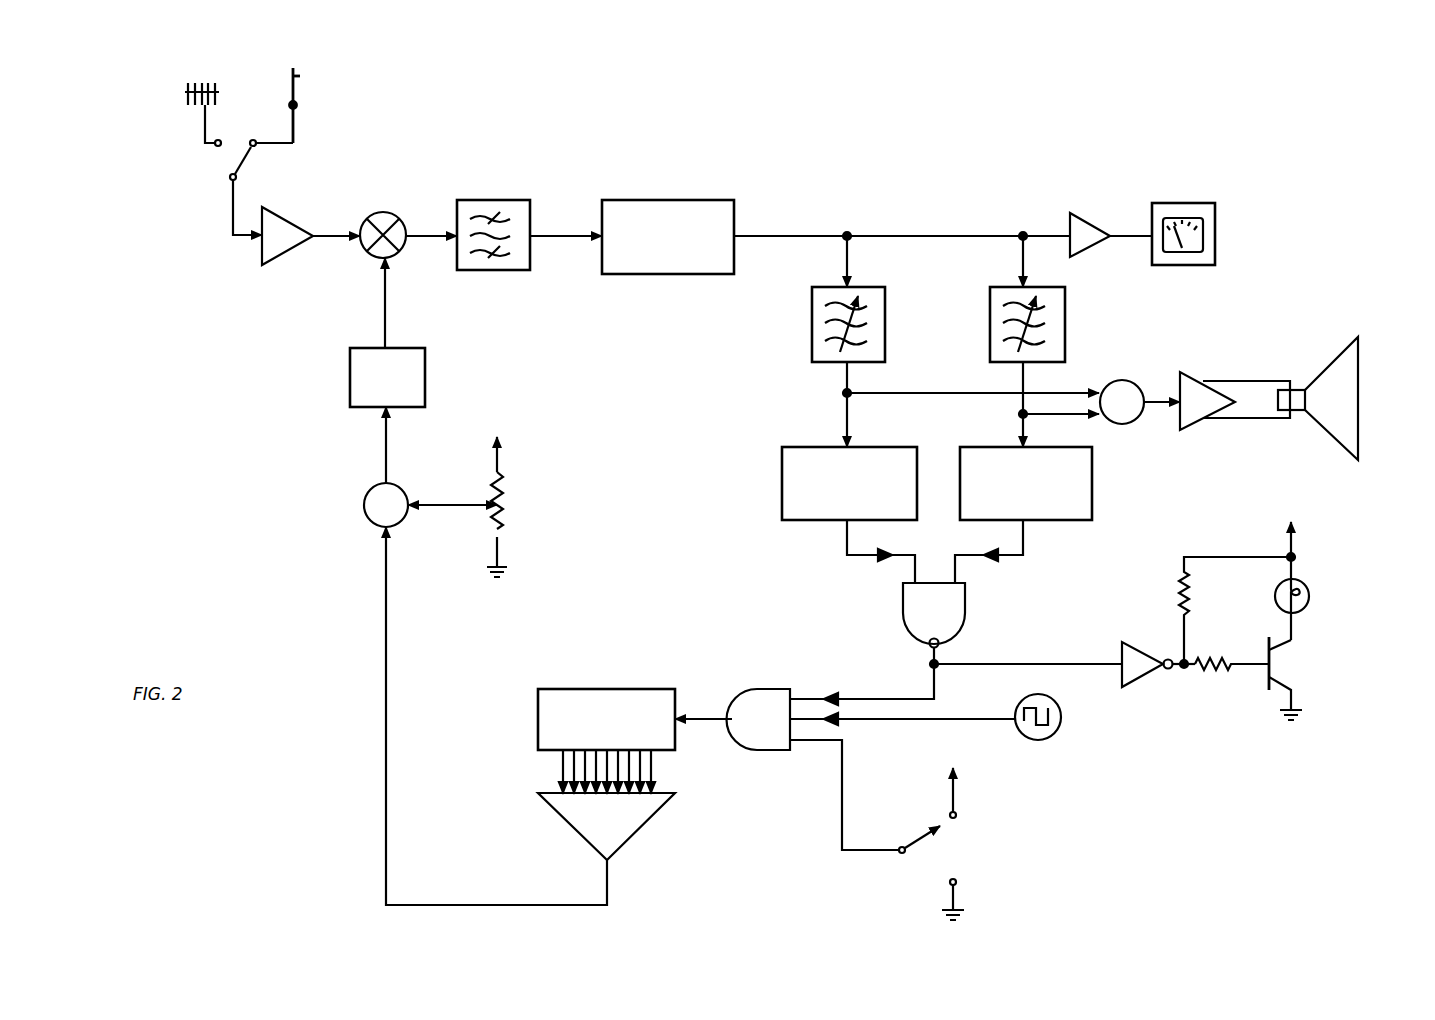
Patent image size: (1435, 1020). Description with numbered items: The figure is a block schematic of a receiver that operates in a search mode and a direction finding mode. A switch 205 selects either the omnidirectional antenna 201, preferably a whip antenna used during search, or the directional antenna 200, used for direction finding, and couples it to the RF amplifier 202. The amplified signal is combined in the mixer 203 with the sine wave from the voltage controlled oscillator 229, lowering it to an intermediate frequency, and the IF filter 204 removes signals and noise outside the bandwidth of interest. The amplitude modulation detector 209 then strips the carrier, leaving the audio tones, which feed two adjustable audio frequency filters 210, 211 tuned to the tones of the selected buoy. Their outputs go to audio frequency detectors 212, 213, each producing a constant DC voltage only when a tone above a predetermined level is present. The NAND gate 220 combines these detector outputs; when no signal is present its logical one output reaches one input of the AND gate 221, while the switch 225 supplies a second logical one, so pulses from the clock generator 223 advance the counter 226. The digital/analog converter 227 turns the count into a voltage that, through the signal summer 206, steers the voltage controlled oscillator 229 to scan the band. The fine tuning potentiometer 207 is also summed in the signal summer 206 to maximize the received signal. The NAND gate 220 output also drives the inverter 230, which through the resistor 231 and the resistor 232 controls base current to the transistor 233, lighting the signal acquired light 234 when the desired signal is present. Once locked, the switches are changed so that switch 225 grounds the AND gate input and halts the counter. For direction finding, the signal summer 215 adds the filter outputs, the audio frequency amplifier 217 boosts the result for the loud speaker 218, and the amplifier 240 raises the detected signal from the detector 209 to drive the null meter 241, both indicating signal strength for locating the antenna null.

The directional antenna 200 is at (155, 99).
The omnidirectional antenna 201 is at (358, 99).
The RF amplifier 202 is at (265, 265).
The mixer 203 is at (388, 212).
The IF filter 204 is at (492, 211).
The switch 205 is at (218, 170).
The signal summer 206 is at (404, 521).
The fine tuning potentiometer 207 is at (508, 498).
The amplitude modulation detector 209 is at (693, 200).
The audio frequency filter 210 is at (812, 346).
The audio frequency filter 211 is at (1065, 315).
The audio frequency detector 212 is at (808, 520).
The audio frequency detector 213 is at (1045, 520).
The signal summer 215 is at (1122, 424).
The audio frequency amplifier 217 is at (1184, 372).
The loud speaker 218 is at (1372, 334).
The NAND gate 220 is at (982, 638).
The AND gate 221 is at (768, 689).
The clock generator 223 is at (1068, 740).
The switch 225 is at (920, 843).
The counter 226 is at (597, 689).
The digital/analog converter 227 is at (640, 825).
The voltage controlled oscillator 229 is at (425, 364).
The inverter 230 is at (1140, 642).
The resistor 231 is at (1190, 597).
The resistor 232 is at (1213, 660).
The transistor 233 is at (1283, 660).
The signal acquired light 234 is at (1309, 596).
The amplifier 240 is at (1078, 215).
The null meter 241 is at (1242, 256).